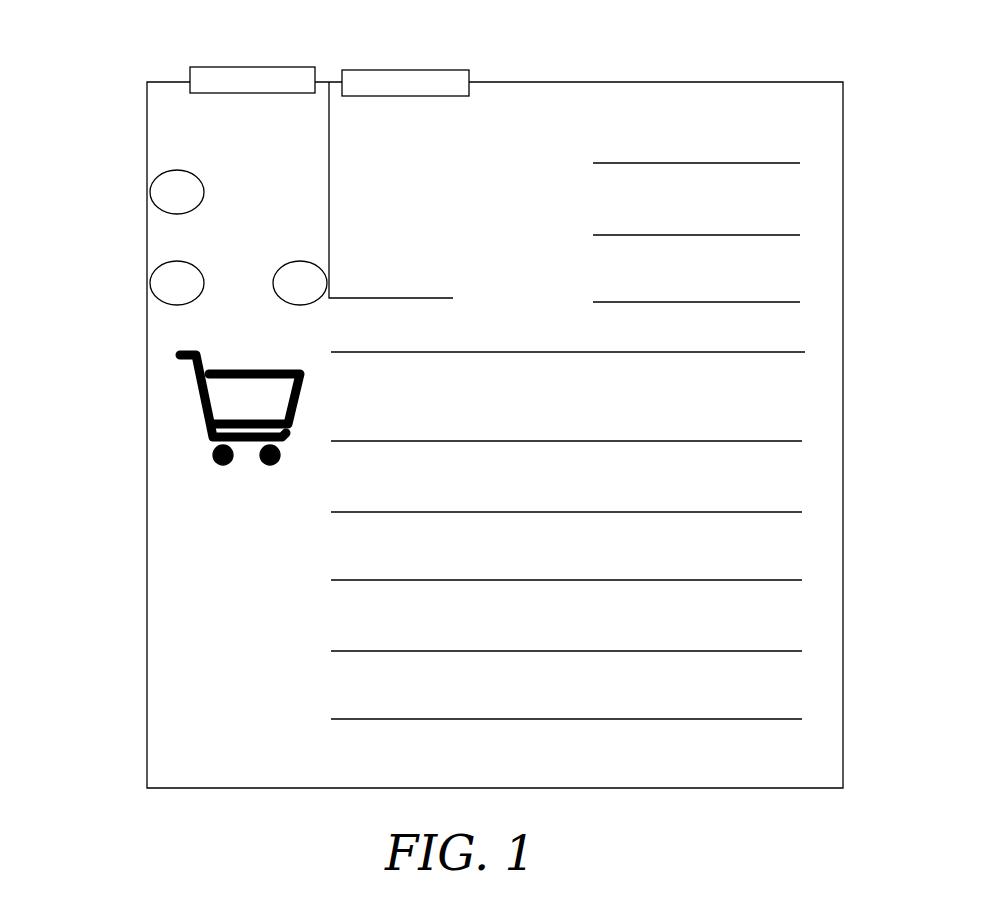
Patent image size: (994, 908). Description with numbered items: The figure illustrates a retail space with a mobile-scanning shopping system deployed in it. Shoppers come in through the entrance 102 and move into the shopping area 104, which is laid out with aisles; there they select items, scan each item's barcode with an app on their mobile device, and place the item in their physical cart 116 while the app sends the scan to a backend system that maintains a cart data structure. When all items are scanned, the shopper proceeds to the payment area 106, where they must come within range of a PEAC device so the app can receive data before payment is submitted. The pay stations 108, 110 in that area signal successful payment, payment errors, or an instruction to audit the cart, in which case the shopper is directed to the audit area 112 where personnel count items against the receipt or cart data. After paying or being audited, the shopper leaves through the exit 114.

The entrance 102 is at (410, 70).
The shopping area 104 is at (753, 208).
The payment area 106 is at (176, 123).
The pay station 108 is at (155, 283).
The pay station 110 is at (302, 262).
The audit area 112 is at (155, 187).
The exit 114 is at (232, 67).
The physical cart 116 is at (192, 388).